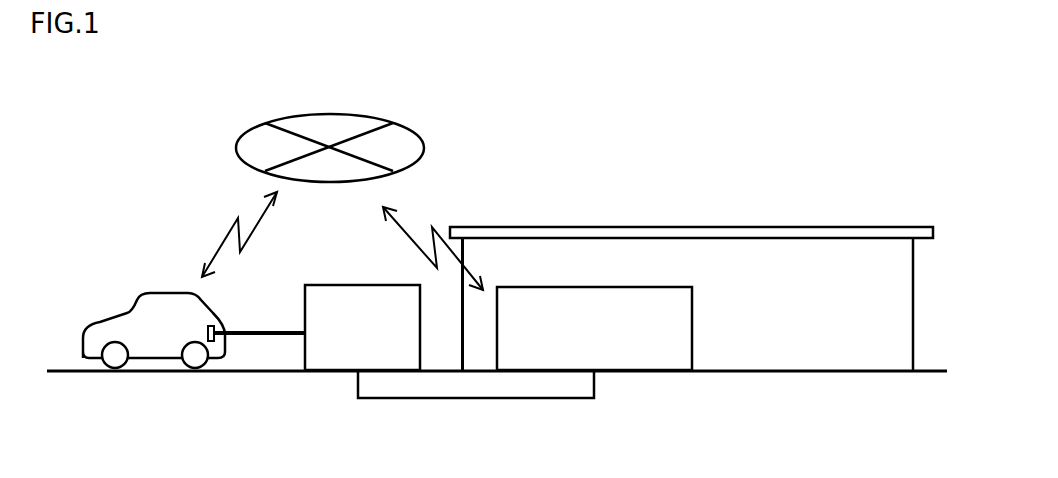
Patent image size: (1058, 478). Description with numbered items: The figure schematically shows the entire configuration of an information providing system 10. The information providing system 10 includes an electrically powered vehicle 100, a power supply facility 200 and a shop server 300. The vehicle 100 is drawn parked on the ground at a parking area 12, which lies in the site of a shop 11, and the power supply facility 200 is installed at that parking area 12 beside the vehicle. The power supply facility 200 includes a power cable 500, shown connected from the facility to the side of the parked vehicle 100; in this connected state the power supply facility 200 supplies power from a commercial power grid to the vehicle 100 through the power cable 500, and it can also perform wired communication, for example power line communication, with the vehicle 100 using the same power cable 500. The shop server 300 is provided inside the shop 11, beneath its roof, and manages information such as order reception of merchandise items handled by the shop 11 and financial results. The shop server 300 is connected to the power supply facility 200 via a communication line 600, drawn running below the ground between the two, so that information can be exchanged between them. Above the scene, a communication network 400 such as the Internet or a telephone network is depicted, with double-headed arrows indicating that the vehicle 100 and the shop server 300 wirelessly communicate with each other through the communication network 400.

The information providing system 10 is at (481, 49).
The shop 11 is at (757, 227).
The parking area 12 is at (234, 373).
The electrically powered vehicle 100 is at (155, 292).
The power supply facility 200 is at (332, 285).
The shop server 300 is at (630, 287).
The communication network 400 is at (355, 113).
The power cable 500 is at (258, 330).
The communication line 600 is at (460, 400).